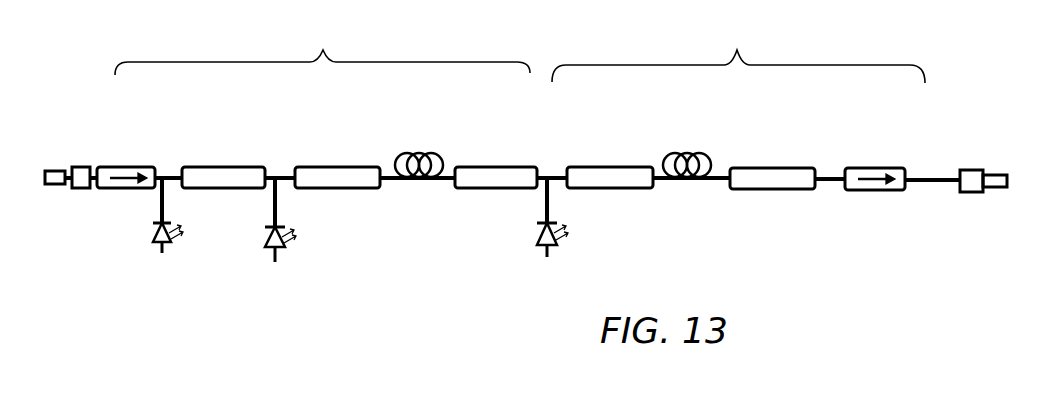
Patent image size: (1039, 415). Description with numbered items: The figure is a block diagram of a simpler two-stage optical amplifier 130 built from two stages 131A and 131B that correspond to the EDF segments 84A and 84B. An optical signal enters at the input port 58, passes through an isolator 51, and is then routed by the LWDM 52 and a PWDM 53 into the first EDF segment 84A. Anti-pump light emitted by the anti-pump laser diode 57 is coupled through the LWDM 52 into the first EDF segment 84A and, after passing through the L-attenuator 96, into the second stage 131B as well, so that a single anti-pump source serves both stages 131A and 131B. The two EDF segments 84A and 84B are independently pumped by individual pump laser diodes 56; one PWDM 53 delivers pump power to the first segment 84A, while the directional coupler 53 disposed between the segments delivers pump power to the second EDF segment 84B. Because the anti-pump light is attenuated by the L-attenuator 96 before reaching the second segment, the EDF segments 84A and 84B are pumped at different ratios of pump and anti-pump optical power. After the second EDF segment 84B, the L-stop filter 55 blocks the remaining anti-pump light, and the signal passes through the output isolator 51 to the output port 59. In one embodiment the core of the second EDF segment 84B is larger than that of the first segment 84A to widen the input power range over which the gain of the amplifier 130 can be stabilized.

The input port 58 is at (87, 166).
The isolator 51 is at (133, 166).
The anti-pump wavelength division multiplexor (LWDM) 52 is at (218, 166).
The pump WDM (PWDM) 53 is at (318, 166).
The first EDF segment 84A is at (408, 183).
The L-attenuator 96 is at (492, 166).
The second EDF segment 84B is at (680, 183).
The L-stop filter 55 is at (775, 167).
The output port 59 is at (975, 169).
The anti-pump laser diode 57 is at (155, 236).
The pump laser diode 56 is at (264, 243).
The first amplifier stage 131A is at (322, 50).
The second amplifier stage 131B is at (738, 55).
The two-stage amplifier 130 is at (826, 269).